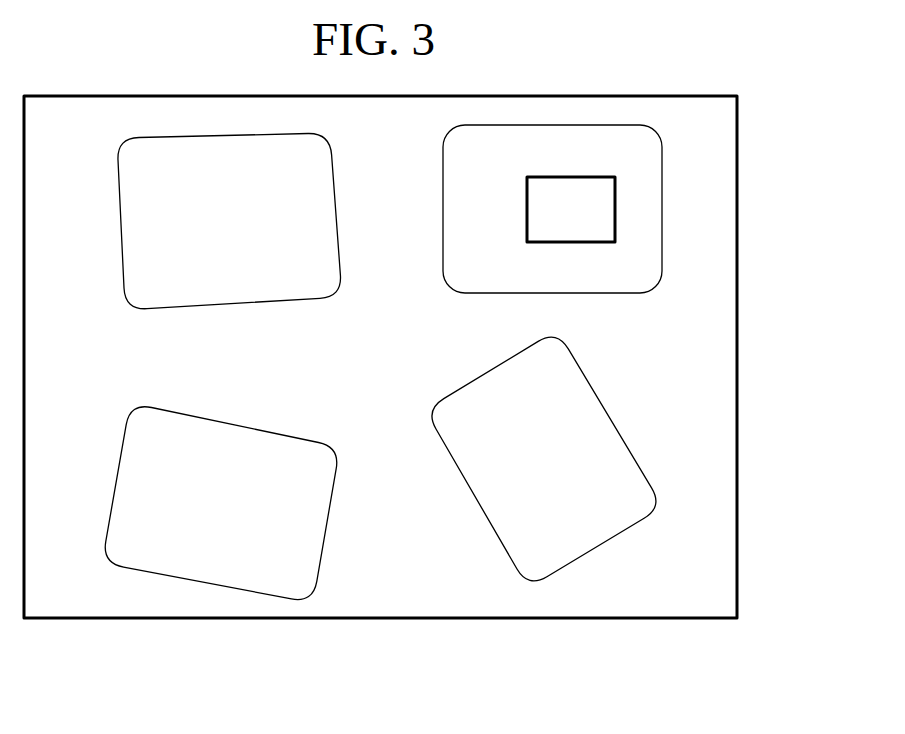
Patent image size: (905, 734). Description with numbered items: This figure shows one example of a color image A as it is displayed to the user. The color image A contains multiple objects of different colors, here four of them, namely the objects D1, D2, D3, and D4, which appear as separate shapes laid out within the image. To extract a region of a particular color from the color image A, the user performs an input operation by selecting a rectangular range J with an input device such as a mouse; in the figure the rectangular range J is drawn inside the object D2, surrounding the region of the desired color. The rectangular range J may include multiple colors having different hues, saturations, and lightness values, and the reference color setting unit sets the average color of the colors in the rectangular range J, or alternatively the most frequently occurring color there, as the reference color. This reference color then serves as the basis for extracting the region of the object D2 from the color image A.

The color image A is at (737, 357).
The object D1 is at (220, 137).
The object D2 is at (565, 125).
The object D3 is at (228, 597).
The object D4 is at (572, 570).
The rectangular range J is at (615, 203).